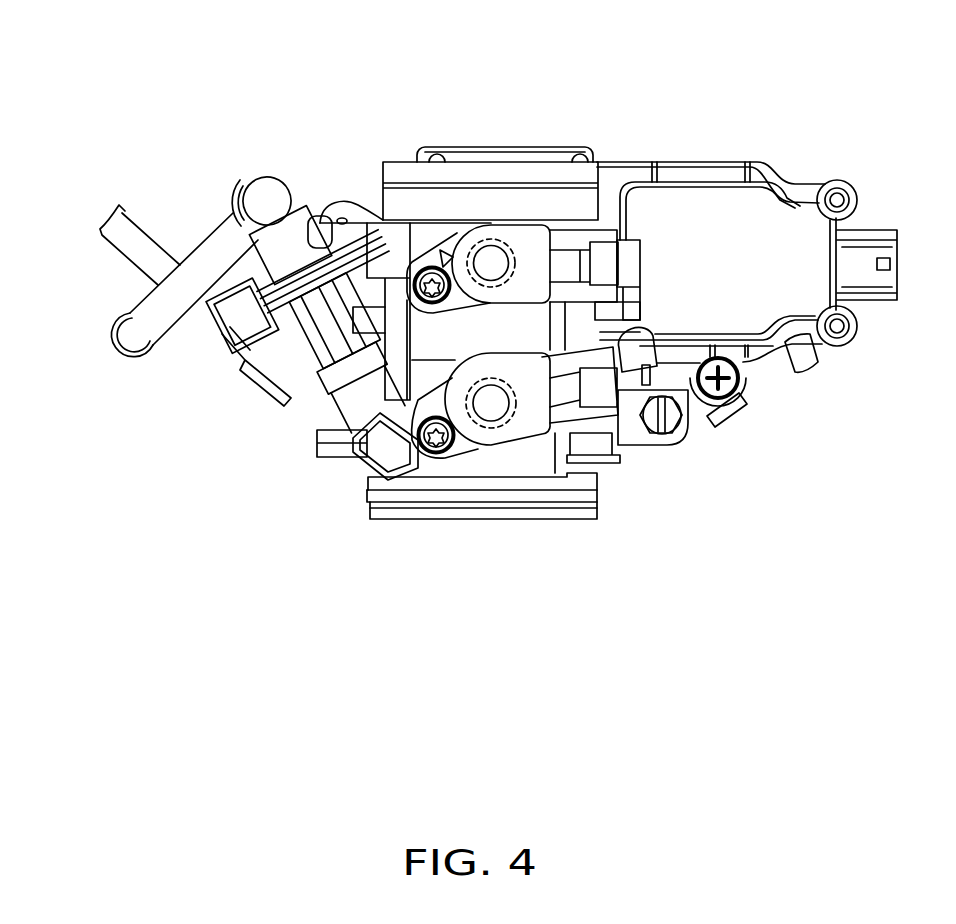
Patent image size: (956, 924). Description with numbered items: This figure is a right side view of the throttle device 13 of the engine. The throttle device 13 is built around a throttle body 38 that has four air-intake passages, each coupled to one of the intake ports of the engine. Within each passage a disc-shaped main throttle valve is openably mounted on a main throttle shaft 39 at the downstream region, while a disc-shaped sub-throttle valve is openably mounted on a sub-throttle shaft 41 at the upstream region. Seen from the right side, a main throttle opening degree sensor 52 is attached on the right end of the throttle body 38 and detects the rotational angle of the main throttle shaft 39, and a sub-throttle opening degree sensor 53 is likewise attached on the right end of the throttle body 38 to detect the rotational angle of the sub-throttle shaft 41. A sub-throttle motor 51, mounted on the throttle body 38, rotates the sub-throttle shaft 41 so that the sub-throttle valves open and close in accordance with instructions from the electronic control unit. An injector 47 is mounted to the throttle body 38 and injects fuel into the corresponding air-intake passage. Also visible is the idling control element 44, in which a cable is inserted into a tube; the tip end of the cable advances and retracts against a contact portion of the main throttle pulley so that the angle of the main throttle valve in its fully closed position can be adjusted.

The throttle device 13 is at (210, 127).
The throttle body 38 is at (383, 220).
The main throttle shaft 39 is at (488, 430).
The sub-throttle shaft 41 is at (480, 238).
The idling control element 44 is at (128, 257).
The injector 47 is at (306, 346).
The sub-throttle motor 51 is at (820, 180).
The main throttle opening degree sensor 52 is at (528, 430).
The sub-throttle opening degree sensor 53 is at (520, 233).